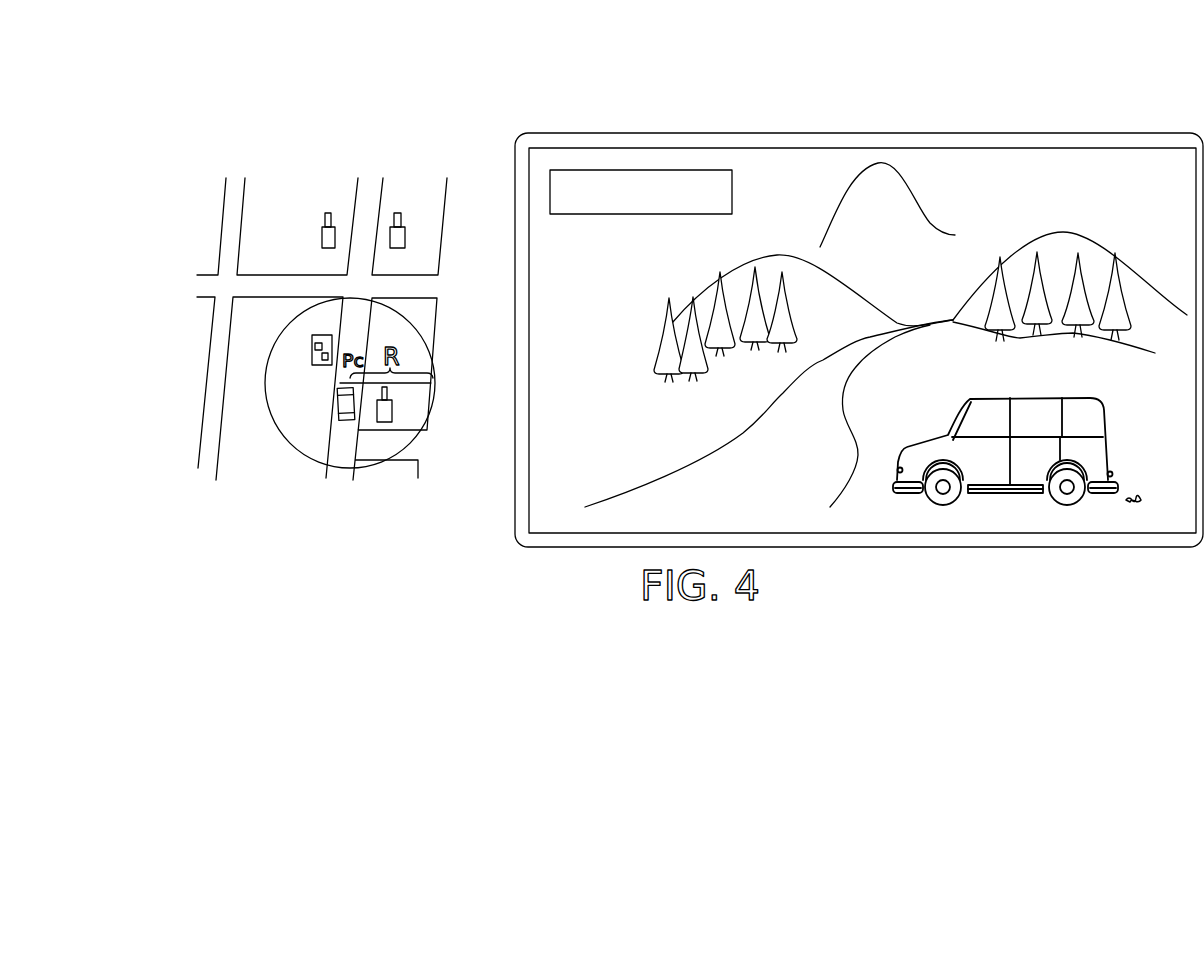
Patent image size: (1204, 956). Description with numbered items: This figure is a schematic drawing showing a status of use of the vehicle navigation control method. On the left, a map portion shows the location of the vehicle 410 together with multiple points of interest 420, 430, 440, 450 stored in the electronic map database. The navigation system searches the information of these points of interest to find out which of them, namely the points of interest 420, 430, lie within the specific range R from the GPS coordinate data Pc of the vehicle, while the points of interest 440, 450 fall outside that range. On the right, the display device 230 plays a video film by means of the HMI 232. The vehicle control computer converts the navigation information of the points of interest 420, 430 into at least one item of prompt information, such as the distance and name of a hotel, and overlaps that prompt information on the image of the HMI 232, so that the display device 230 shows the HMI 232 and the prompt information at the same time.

The location of the vehicle 410 is at (337, 385).
The point of interest 420 is at (393, 410).
The point of interest 430 is at (312, 343).
The point of interest 440 is at (405, 237).
The point of interest 450 is at (322, 240).
The display device 230 is at (518, 515).
The HMI (Human Machine Interface) 232 is at (518, 475).